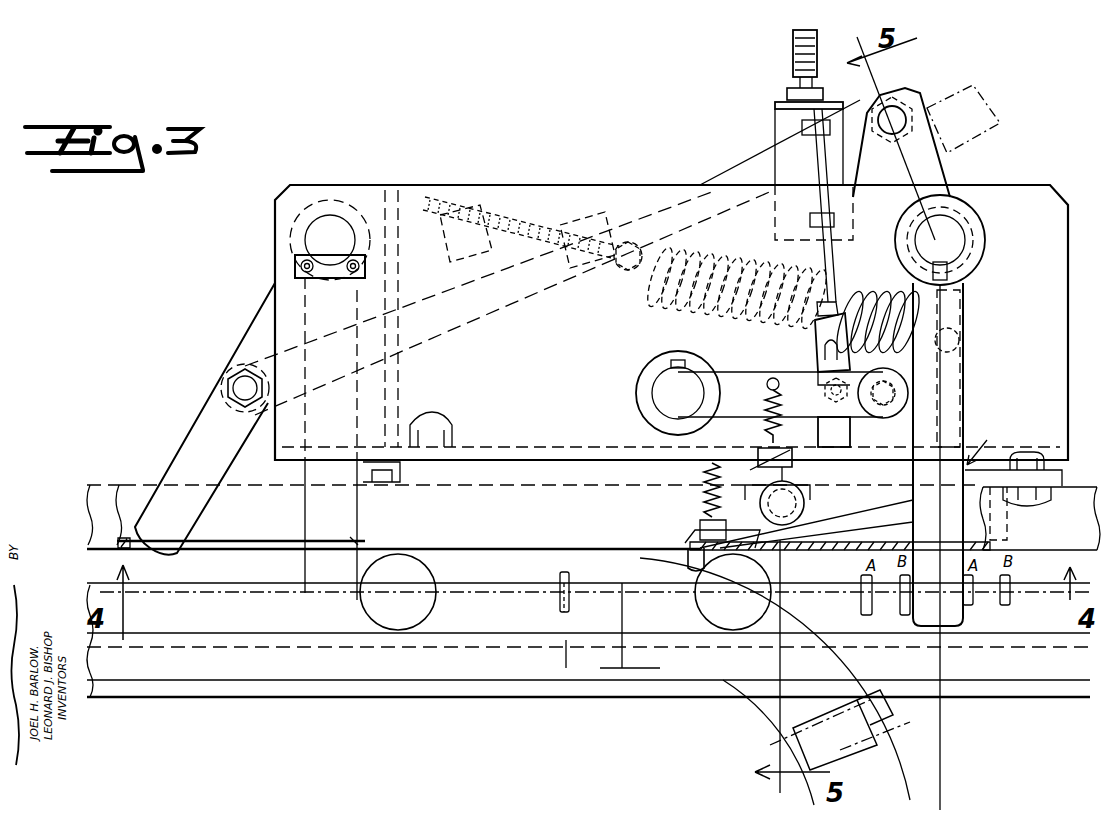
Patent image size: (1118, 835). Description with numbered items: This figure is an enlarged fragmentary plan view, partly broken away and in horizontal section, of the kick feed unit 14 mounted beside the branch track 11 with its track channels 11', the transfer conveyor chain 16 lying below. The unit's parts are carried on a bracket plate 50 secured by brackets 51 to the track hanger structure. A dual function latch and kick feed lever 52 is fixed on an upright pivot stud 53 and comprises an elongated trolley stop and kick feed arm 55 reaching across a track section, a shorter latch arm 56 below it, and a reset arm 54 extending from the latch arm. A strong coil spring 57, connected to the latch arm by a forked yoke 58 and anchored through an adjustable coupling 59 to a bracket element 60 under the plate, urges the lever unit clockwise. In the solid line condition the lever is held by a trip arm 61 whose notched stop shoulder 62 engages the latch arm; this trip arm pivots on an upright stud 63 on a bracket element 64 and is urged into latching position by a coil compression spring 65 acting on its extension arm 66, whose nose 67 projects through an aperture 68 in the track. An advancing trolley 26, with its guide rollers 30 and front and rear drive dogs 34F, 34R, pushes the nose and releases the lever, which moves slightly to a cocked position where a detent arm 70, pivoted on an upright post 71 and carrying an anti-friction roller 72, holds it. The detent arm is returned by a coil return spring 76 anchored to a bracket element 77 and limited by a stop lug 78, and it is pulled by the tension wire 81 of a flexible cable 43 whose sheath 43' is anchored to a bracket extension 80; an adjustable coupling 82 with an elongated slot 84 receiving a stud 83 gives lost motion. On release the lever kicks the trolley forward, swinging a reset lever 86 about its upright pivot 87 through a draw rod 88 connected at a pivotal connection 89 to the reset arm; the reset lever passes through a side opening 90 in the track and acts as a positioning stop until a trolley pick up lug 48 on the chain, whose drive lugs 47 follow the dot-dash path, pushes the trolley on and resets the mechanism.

The branch track 11 is at (1043, 501).
The track channel 11' is at (538, 592).
The kick feed unit 14 is at (558, 173).
The transfer conveyor chain 16 is at (345, 690).
The trolley 26 is at (1021, 591).
The guide roller 30 is at (392, 632).
The front drive dog 34F is at (560, 592).
The rear drive dog 34R is at (1003, 608).
The flexible cable 43 is at (823, 87).
The cable sheath 43' is at (788, 54).
The drive lug 47 is at (882, 698).
The trolley pick up lug 48 is at (671, 617).
The bracket plate 50 is at (600, 190).
The bracket 51 is at (458, 466).
The latch and kick feed lever 52 is at (795, 566).
The pivot stud 53 is at (955, 228).
The reset arm 54 is at (935, 165).
The trolley stop and kick feed arm 55 is at (965, 398).
The latch arm 56 is at (920, 459).
The coil spring 57 is at (695, 305).
The forked yoke 58 is at (962, 305).
The adjustable coupling 59 is at (610, 268).
The bracket element 60 is at (490, 195).
The trip arm 61 is at (868, 502).
The stop shoulder 62 is at (895, 515).
The upright stud 63 is at (806, 500).
The bracket element 64 is at (758, 486).
The coil compression spring 65 is at (700, 496).
The extension arm 66 is at (698, 522).
The nose 67 is at (682, 557).
The aperture 68 is at (690, 540).
The detent arm 70 is at (718, 362).
The upright post 71 is at (665, 385).
The anti-friction roller 72 is at (905, 315).
The coil return spring 76 is at (790, 370).
The bracket element 77 is at (775, 455).
The stop lug 78 is at (850, 432).
The bracket extension 80 is at (774, 104).
The tension wire 81 is at (835, 265).
The adjustable coupling 82 is at (868, 310).
The stud 83 is at (823, 368).
The elongated slot 84 is at (818, 335).
The reset lever 86 is at (195, 442).
The upright pivot 87 is at (338, 225).
The draw rod 88 is at (525, 290).
The pivotal connection 89 is at (900, 105).
The side opening 90 is at (248, 540).